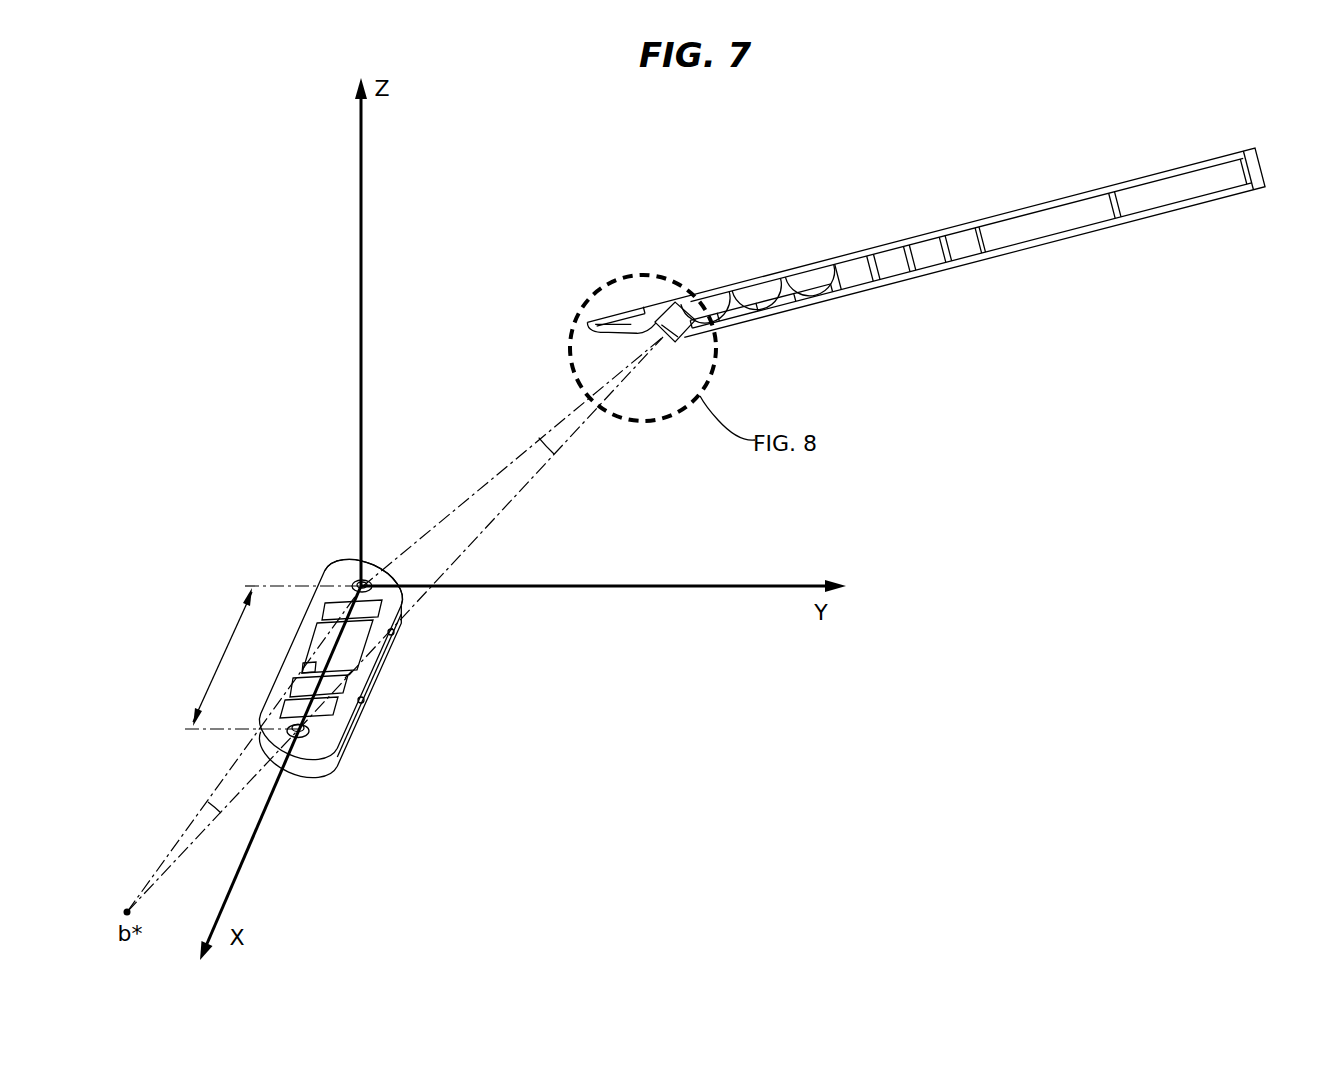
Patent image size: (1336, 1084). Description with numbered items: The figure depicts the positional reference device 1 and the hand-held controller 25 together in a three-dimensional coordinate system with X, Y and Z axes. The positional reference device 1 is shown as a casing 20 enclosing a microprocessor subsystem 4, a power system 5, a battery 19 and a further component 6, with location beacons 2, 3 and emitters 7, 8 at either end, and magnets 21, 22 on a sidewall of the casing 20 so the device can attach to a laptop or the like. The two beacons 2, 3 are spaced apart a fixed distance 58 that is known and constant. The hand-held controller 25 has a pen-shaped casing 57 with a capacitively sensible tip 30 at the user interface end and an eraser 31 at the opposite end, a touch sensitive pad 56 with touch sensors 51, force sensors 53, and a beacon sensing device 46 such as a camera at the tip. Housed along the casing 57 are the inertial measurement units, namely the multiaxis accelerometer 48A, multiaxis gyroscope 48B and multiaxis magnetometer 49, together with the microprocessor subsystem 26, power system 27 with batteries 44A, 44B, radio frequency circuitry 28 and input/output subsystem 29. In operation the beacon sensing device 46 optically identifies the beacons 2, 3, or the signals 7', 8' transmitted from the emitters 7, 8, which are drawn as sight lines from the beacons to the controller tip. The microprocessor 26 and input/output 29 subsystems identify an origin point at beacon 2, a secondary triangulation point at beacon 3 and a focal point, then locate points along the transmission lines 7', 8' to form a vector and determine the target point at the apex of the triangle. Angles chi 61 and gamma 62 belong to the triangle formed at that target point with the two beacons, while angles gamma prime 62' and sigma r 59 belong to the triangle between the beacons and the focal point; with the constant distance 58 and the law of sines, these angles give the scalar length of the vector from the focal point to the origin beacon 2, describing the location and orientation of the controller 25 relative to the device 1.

The positional reference device 1 is at (463, 730).
The location beacon 2 is at (323, 727).
The location beacon 3 is at (360, 582).
The microprocessor subsystem 4 is at (282, 710).
The power system 5 is at (300, 683).
The display element 6 is at (327, 608).
The emitter 7 is at (331, 713).
The emitter 8 is at (378, 578).
The battery 19 is at (322, 630).
The casing 20 is at (384, 647).
The magnet 21 is at (363, 702).
The magnet 22 is at (394, 631).
The hand-held controller 25 is at (888, 190).
The microprocessor subsystem 26 is at (923, 258).
The power system 27 is at (962, 250).
The radio frequency circuitry 28 is at (890, 270).
The input/output subsystem 29 is at (850, 277).
The capacitively sensible tip 30 is at (580, 333).
The eraser 31 is at (1261, 190).
The battery 44A is at (1047, 232).
The battery 44B is at (1183, 197).
The beacon sensing device 46 is at (690, 337).
The multiaxis accelerometer 48A is at (755, 315).
The multiaxis gyroscope 48B is at (792, 310).
The multiaxis magnetometer 49 is at (722, 323).
The touch sensor 51 is at (757, 277).
The force sensor 53 is at (623, 318).
The touch sensitive pad 56 is at (806, 282).
The pen-shaped casing 57 is at (1057, 198).
The distance 58 is at (222, 657).
The angle sigma_r 59 is at (555, 455).
The angle chi 61 is at (212, 805).
The angle gamma 62 is at (244, 749).
The angle gamma prime 62' is at (395, 686).
The beacon sensing signal 7' is at (480, 533).
The beacon sensing signal 8' is at (512, 462).